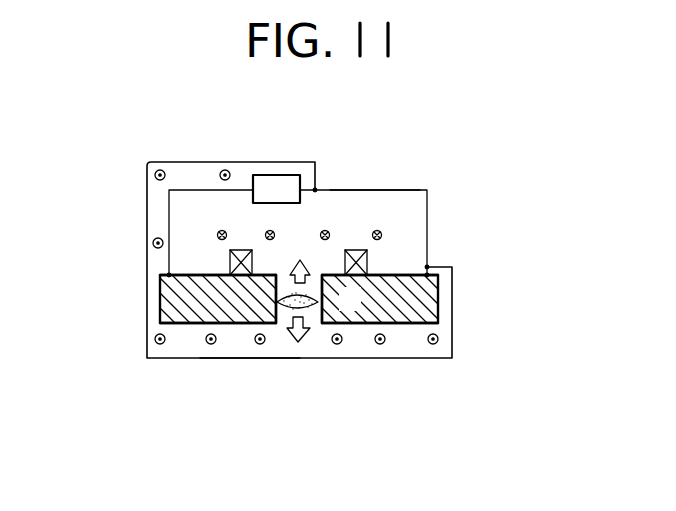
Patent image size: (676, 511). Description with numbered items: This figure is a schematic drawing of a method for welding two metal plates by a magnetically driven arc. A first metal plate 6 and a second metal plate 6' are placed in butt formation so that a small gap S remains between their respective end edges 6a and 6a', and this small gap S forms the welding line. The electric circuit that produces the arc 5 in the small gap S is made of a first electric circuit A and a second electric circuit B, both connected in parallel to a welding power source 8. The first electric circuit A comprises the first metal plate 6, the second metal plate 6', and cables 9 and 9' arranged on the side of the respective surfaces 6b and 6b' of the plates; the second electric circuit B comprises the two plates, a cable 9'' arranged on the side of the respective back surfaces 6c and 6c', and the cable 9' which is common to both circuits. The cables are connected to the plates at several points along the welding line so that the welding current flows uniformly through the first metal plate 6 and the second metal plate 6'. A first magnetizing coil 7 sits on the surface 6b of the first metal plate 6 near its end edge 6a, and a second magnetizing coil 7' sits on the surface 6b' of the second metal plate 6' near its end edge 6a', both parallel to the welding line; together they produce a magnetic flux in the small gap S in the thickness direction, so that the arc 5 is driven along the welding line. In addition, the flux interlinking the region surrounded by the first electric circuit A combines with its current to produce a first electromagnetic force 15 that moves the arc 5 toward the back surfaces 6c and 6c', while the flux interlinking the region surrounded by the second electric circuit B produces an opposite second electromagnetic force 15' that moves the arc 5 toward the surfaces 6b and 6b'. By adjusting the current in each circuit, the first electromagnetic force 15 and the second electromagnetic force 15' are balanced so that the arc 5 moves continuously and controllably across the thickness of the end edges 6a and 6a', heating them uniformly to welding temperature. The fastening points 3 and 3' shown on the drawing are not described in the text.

The fastening screws 3 is at (345, 197).
The fastening screws 3' is at (271, 287).
The arc 5 is at (373, 299).
The first metal plate 6 is at (373, 261).
The second metal plate 6' is at (211, 264).
The end edge 6a is at (344, 334).
The end edge 6a' is at (270, 335).
The surface 6b is at (399, 257).
The surface 6b' is at (186, 259).
The back surface 6c is at (380, 363).
The back surface 6c' is at (218, 357).
The first magnetizing coil 7 is at (363, 240).
The second magnetizing coil 7' is at (248, 242).
The welding power source 8 is at (273, 175).
The cable 9 is at (364, 206).
The cable 9' is at (210, 198).
The cable 9'' is at (250, 388).
The first electromagnetic force 15 is at (311, 356).
The second electromagnetic force 15' is at (312, 247).
The first electric circuit A is at (412, 187).
The second electric circuit B is at (432, 361).
The small gap S is at (286, 313).